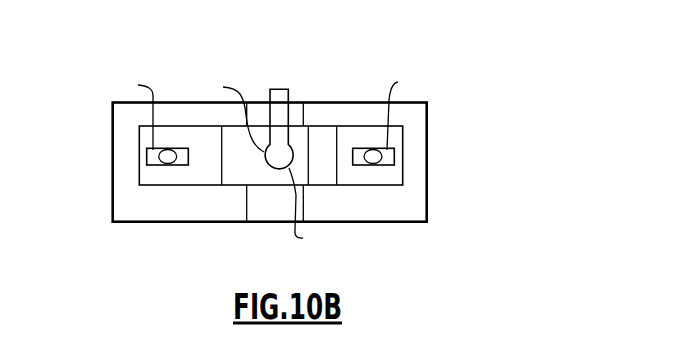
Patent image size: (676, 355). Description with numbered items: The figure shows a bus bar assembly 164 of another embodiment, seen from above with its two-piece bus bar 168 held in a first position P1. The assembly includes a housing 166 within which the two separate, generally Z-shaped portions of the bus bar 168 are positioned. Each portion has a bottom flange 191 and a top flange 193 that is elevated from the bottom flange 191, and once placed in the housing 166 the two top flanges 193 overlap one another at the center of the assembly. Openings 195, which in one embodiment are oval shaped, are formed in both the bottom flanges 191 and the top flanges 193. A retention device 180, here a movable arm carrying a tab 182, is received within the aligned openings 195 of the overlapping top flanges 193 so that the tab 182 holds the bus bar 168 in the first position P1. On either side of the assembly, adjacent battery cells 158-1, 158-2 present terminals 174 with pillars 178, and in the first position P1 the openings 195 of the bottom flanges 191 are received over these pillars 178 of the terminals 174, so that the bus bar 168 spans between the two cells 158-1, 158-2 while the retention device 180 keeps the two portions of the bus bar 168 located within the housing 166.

The bus bar assembly 164 is at (371, 58).
The housing 166 is at (209, 233).
The bus bar 168 is at (273, 204).
The terminals 174 is at (145, 156).
The pillars 178 is at (167, 149).
The retention device 180 is at (289, 105).
The tab 182 is at (226, 113).
The bottom flange 191 is at (165, 173).
The top flange 193 is at (234, 173).
The openings 195 is at (268, 163).
The battery cell 158-1 is at (131, 213).
The battery cell 158-2 is at (410, 217).
The first position P1 is at (518, 174).